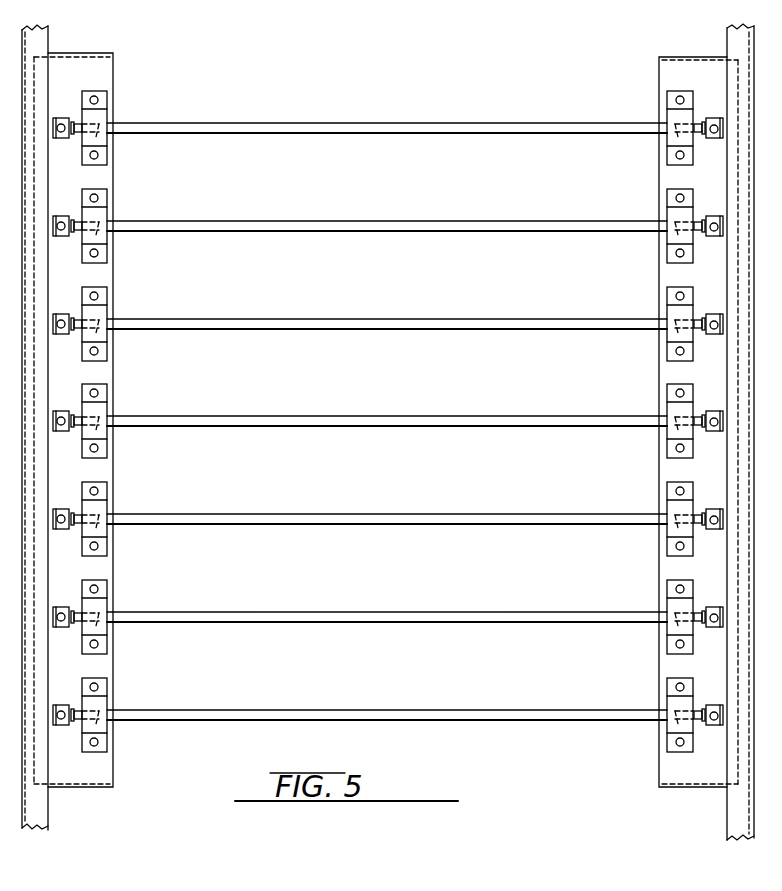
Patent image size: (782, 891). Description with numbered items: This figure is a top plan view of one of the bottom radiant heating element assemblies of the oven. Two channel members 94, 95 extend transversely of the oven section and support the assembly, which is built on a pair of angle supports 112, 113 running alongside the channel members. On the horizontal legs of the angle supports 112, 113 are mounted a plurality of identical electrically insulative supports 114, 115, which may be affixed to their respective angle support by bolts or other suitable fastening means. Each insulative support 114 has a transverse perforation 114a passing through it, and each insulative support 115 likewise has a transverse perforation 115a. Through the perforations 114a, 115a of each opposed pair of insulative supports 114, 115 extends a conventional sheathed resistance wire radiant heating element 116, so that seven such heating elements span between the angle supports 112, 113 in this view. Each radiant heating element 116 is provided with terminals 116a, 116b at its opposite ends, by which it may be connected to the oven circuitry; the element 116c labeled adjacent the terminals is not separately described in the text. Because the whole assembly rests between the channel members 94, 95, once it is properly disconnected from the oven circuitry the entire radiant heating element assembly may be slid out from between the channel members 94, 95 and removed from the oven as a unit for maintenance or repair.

The channel member 94 is at (35, 818).
The channel member 95 is at (728, 820).
The angle support 112 is at (83, 777).
The angle support 113 is at (667, 767).
The electrically insulative support 114 is at (100, 114).
The transverse perforation 114a is at (100, 136).
The electrically insulative support 115 is at (670, 117).
The transverse perforation 115a is at (680, 136).
The sheathed resistance wire radiant heating element 116 is at (362, 123).
The terminal 116a is at (62, 118).
The terminal 116b is at (714, 118).
The nut 116c is at (108, 115).